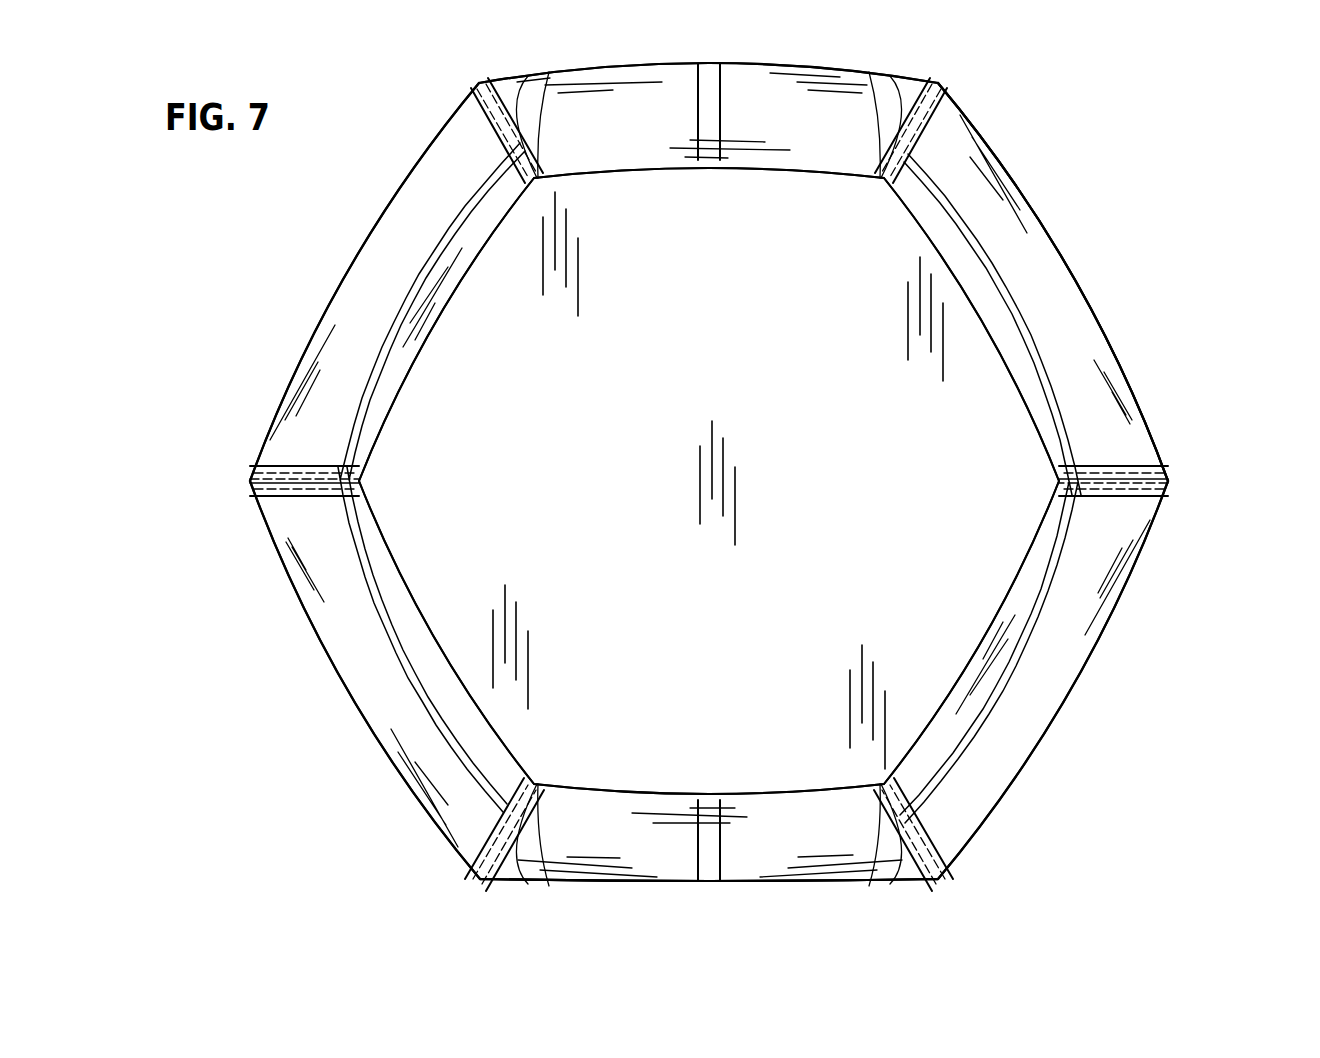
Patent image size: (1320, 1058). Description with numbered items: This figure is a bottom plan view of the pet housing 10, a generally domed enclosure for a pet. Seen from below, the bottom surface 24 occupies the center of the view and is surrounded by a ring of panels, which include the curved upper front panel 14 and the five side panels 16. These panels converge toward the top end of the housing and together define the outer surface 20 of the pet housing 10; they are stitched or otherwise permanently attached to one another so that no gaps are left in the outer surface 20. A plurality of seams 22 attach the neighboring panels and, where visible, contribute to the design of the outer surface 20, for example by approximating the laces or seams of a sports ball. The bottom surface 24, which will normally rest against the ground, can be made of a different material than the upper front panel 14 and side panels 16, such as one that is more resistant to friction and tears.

The pet housing 10 is at (1146, 84).
The upper front panel 14 is at (603, 883).
The side panels 16 is at (615, 103).
The outer surface 20 is at (1046, 226).
The seams 22 is at (483, 85).
The bottom surface 24 is at (880, 418).